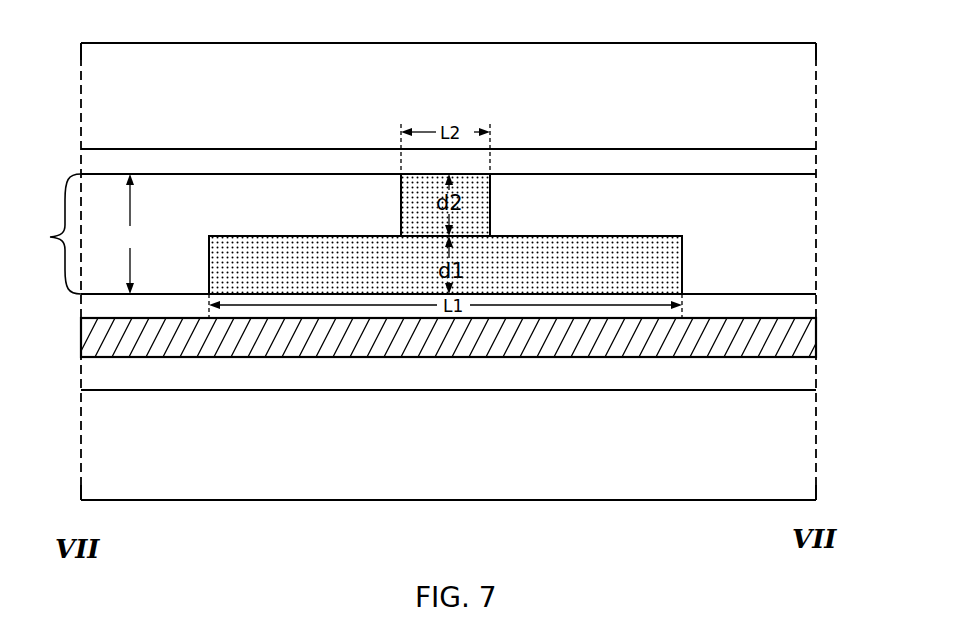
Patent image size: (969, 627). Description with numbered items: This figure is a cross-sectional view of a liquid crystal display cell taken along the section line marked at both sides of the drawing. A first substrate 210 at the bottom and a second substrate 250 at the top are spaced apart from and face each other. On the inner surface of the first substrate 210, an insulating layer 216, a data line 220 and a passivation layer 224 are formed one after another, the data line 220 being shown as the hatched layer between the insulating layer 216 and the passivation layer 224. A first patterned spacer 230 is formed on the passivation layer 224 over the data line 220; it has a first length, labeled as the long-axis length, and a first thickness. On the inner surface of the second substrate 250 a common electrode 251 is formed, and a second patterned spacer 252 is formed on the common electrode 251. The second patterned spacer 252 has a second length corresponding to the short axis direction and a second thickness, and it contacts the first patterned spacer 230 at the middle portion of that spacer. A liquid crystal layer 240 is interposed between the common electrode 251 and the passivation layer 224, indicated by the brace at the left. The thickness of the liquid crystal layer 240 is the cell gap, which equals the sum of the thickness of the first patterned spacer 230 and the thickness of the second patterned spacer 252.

The first substrate 210 is at (172, 462).
The insulating layer 216 is at (802, 370).
The data line 220 is at (802, 340).
The passivation layer 224 is at (802, 300).
The first patterned spacer 230 is at (677, 273).
The liquid crystal layer 240 is at (73, 234).
The second substrate 250 is at (172, 118).
The common electrode 251 is at (679, 158).
The second patterned spacer 252 is at (484, 200).